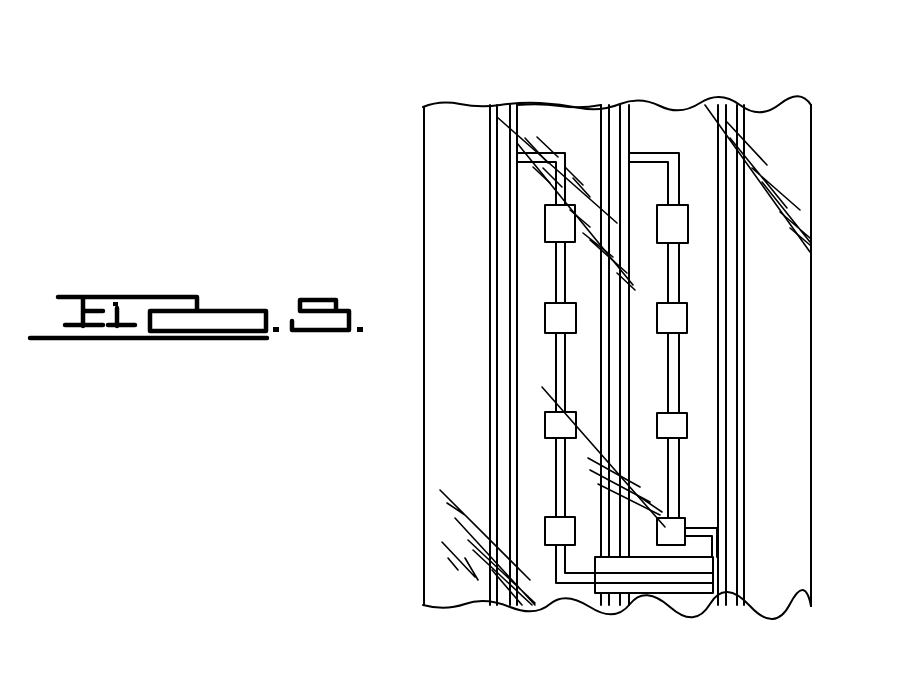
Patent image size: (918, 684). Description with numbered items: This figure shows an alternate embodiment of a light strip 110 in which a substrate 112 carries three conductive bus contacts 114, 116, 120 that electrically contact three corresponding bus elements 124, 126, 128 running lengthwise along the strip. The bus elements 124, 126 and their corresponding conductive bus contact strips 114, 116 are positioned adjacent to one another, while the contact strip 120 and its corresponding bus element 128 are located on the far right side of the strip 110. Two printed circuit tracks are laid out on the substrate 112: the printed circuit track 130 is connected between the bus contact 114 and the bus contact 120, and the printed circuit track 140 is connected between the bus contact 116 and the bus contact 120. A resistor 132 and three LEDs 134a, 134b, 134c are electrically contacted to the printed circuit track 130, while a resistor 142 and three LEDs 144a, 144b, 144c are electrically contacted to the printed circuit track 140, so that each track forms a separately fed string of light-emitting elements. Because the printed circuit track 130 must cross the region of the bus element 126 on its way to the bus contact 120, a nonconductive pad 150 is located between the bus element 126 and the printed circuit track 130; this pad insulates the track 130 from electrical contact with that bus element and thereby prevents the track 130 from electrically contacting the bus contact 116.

The light strip 110 is at (806, 84).
The substrate 112 is at (585, 110).
The conductive bus contact 114 is at (488, 120).
The conductive bus contact 116 is at (630, 108).
The conductive bus contact 120 is at (763, 105).
The bus element 124 is at (500, 106).
The bus element 126 is at (618, 108).
The bus element 128 is at (733, 106).
The printed circuit track 130 is at (555, 142).
The resistor 132 is at (553, 218).
The LED 134a is at (553, 318).
The LED 134b is at (553, 425).
The LED 134c is at (553, 540).
The printed circuit track 140 is at (673, 153).
The resistor 142 is at (678, 233).
The LED 144a is at (678, 313).
The LED 144b is at (678, 423).
The LED 144c is at (678, 530).
The nonconductive pad 150 is at (676, 590).